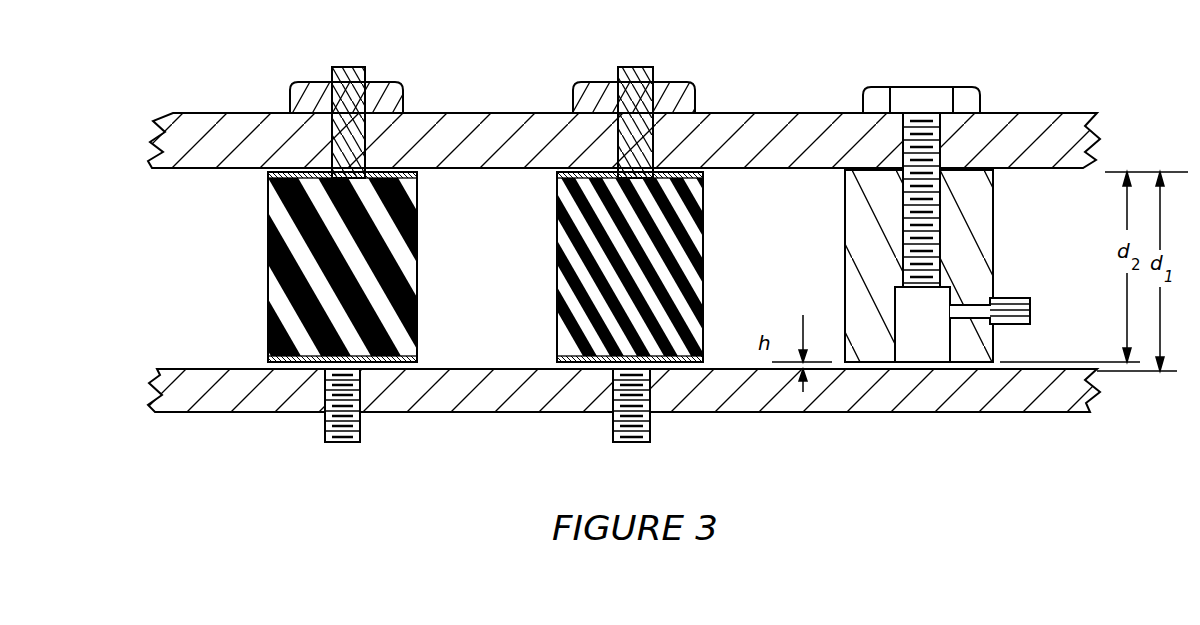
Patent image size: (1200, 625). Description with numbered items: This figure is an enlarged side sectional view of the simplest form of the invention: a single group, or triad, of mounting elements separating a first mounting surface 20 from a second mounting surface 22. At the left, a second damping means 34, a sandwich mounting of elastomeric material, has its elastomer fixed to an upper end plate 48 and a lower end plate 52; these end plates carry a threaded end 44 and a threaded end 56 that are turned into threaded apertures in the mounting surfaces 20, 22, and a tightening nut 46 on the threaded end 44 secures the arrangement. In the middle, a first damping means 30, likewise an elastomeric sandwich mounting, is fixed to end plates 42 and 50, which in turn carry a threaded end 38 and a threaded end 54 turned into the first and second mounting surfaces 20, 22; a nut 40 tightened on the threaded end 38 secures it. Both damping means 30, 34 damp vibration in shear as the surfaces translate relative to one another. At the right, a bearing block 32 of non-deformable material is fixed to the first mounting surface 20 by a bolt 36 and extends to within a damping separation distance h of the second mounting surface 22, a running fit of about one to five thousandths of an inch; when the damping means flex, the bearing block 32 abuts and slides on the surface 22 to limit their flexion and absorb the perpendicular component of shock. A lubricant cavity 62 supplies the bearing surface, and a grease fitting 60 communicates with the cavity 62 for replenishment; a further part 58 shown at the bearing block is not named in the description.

The first mounting surface 20 is at (840, 112).
The second mounting surface 22 is at (880, 413).
The first damping means 30 is at (557, 255).
The bearing block 32 is at (870, 222).
The second damping means 34 is at (268, 228).
The bolt 36 is at (885, 88).
The threaded end 38 is at (620, 67).
The nut 40 is at (576, 86).
The end plate 42 is at (557, 176).
The threaded end 44 is at (332, 68).
The tightening nut 46 is at (290, 96).
The end plate 48 is at (268, 174).
The end plate 50 is at (557, 360).
The end plate 52 is at (268, 360).
The threaded end 54 is at (613, 410).
The threaded end 56 is at (325, 410).
The threaded shank 58 is at (975, 287).
The grease fitting 60 is at (1000, 298).
The lubricant cavity 62 is at (895, 292).